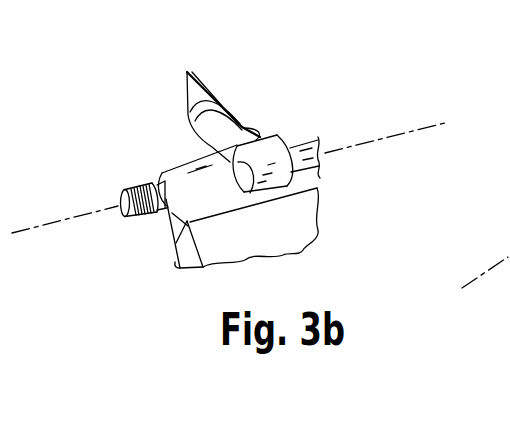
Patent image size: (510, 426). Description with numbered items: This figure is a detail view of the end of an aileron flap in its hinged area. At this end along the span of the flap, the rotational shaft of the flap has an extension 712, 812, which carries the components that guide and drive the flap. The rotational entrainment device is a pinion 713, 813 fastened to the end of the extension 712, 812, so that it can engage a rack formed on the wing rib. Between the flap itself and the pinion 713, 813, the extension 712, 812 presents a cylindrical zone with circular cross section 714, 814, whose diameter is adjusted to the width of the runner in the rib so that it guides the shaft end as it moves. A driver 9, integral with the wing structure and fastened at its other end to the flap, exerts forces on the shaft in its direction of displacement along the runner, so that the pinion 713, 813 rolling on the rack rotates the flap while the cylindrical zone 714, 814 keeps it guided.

The driver 9 is at (239, 122).
The extension 712 is at (182, 144).
The extension 812 is at (132, 172).
The pinion 713 is at (90, 233).
The pinion 813 is at (142, 220).
The cylindrical zone with circular cross section 714 is at (146, 259).
The cylindrical zone with circular cross section 814 is at (172, 224).